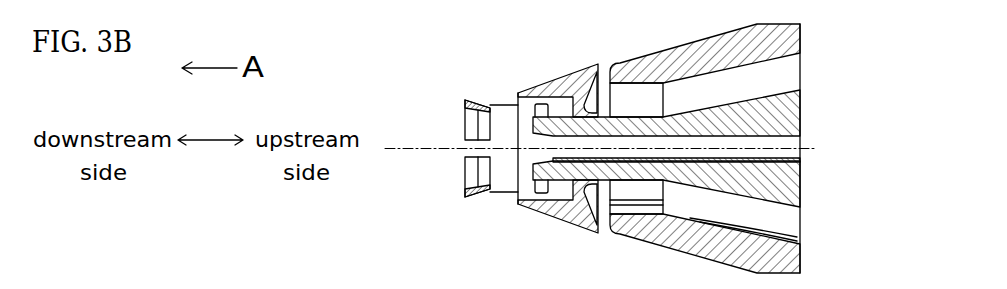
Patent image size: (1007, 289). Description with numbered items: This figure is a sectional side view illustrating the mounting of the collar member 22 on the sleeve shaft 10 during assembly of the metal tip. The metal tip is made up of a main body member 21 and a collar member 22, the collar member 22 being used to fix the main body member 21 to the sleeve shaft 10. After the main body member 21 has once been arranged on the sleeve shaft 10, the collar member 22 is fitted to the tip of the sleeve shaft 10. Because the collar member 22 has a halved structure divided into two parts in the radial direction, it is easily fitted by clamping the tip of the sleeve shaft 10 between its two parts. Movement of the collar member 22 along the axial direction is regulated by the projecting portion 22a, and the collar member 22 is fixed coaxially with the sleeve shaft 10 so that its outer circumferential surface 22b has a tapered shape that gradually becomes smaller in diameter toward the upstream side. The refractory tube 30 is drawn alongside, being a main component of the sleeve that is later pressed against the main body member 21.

The sleeve shaft 10 is at (800, 80).
The refractory tube 30 is at (672, 48).
The main body member 21 is at (577, 72).
The collar member 22 is at (455, 149).
The projecting portion 22a is at (470, 124).
The outer circumferential surface 22b is at (476, 196).